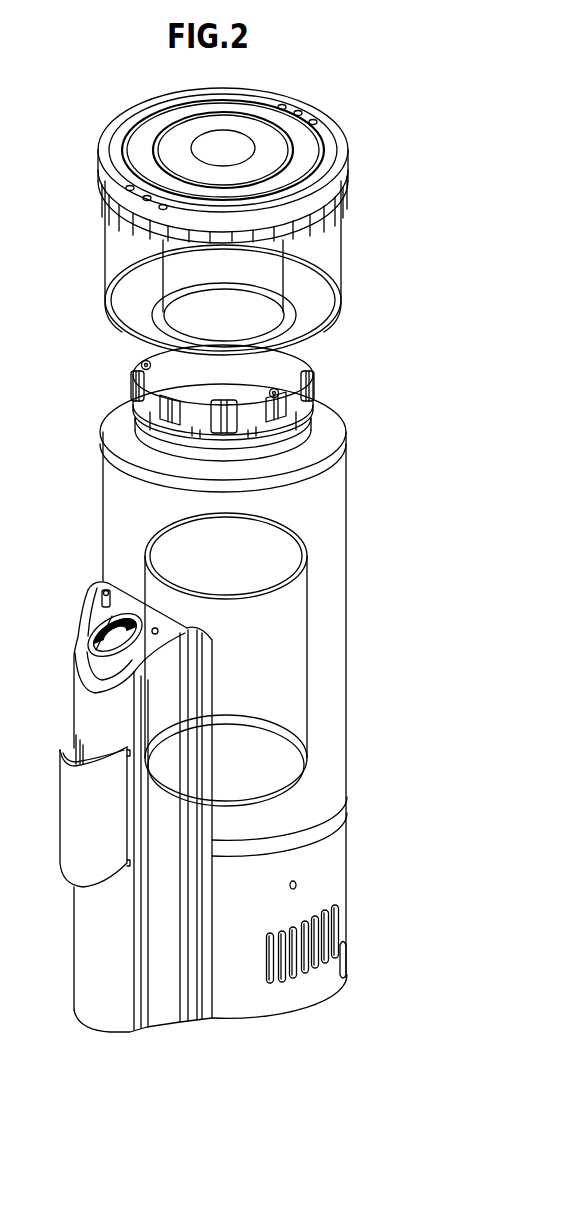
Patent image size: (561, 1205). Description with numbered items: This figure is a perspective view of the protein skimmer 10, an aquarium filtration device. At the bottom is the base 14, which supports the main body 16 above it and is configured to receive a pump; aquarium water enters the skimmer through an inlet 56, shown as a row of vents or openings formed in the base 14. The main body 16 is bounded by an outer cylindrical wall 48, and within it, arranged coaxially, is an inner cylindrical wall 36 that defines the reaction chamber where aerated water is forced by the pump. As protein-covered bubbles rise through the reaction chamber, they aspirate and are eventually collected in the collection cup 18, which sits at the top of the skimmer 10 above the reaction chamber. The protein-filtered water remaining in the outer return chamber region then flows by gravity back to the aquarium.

The protein skimmer 10 is at (343, 99).
The base 14 is at (350, 838).
The main body 16 is at (323, 537).
The collection cup 18 is at (328, 248).
The inner cylindrical wall 36 is at (282, 662).
The outer cylindrical wall 48 is at (103, 510).
The inlet 56 is at (305, 950).